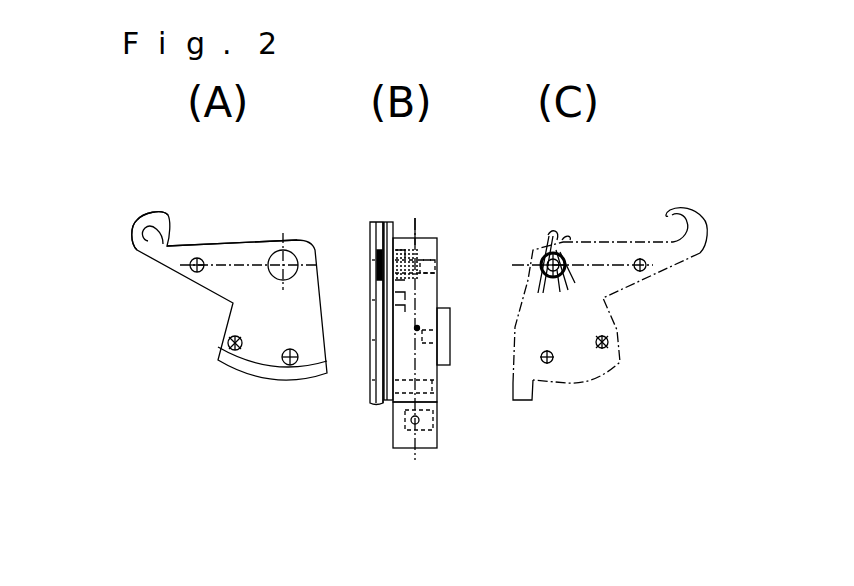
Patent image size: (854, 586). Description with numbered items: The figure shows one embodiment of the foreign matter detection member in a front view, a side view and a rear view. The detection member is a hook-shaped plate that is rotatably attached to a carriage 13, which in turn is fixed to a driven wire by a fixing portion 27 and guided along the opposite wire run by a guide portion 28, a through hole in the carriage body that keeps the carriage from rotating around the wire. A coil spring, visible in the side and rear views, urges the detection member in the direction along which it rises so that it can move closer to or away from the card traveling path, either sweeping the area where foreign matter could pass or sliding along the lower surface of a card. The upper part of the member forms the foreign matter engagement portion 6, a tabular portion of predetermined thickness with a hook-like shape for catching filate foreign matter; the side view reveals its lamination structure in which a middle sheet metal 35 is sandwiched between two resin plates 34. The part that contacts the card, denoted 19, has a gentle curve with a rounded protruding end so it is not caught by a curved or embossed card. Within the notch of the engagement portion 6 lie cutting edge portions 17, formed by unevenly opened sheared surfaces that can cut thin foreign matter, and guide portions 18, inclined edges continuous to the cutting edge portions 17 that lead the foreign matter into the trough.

The foreign matter engagement portion 6 is at (125, 248).
The carriage 13 is at (420, 452).
The cutting edge portion 17 is at (173, 232).
The guide portion 18 is at (233, 241).
The card contact part 19 is at (157, 207).
The fixing portion 27 is at (420, 324).
The guide portion 28 is at (424, 420).
The resin plate 34 is at (370, 237).
The middle sheet metal 35 is at (383, 222).